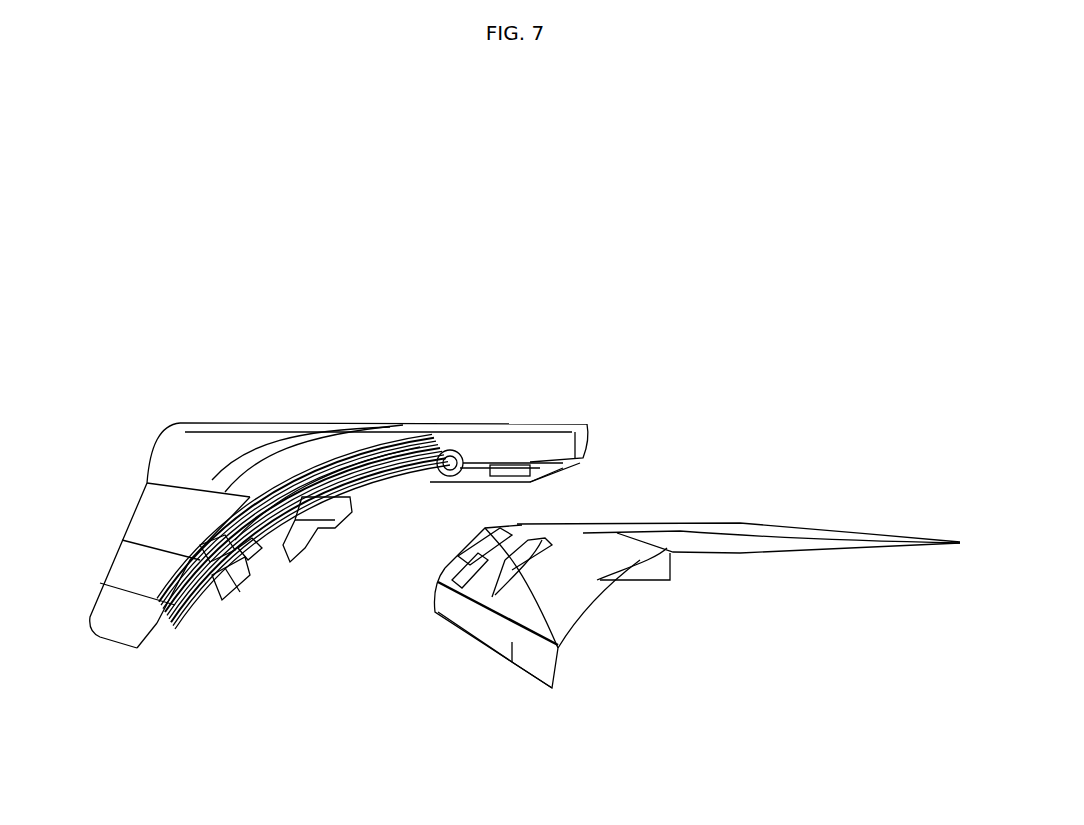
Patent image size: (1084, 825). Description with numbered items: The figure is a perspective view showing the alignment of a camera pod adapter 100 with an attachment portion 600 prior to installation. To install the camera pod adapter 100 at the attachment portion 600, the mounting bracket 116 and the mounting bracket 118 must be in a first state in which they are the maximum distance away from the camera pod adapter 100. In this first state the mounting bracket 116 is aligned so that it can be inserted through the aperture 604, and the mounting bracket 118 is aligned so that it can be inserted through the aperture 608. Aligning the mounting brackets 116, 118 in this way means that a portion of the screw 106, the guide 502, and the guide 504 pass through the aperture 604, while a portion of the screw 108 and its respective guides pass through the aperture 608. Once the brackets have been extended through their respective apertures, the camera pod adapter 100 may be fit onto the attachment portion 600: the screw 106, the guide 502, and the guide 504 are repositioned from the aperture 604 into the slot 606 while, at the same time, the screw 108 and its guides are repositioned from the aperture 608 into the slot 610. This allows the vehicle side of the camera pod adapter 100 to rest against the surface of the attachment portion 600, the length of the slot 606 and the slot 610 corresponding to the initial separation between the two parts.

The camera pod adapter 100 is at (243, 418).
The screw 106 is at (293, 518).
The screw 108 is at (227, 555).
The mounting bracket 116 is at (318, 528).
The mounting bracket 118 is at (236, 580).
The guide 502 is at (243, 547).
The guide 504 is at (218, 562).
The attachment portion 600 is at (816, 527).
The aperture 604 is at (490, 545).
The slot 606 is at (462, 573).
The aperture 608 is at (525, 555).
The slot 610 is at (502, 582).